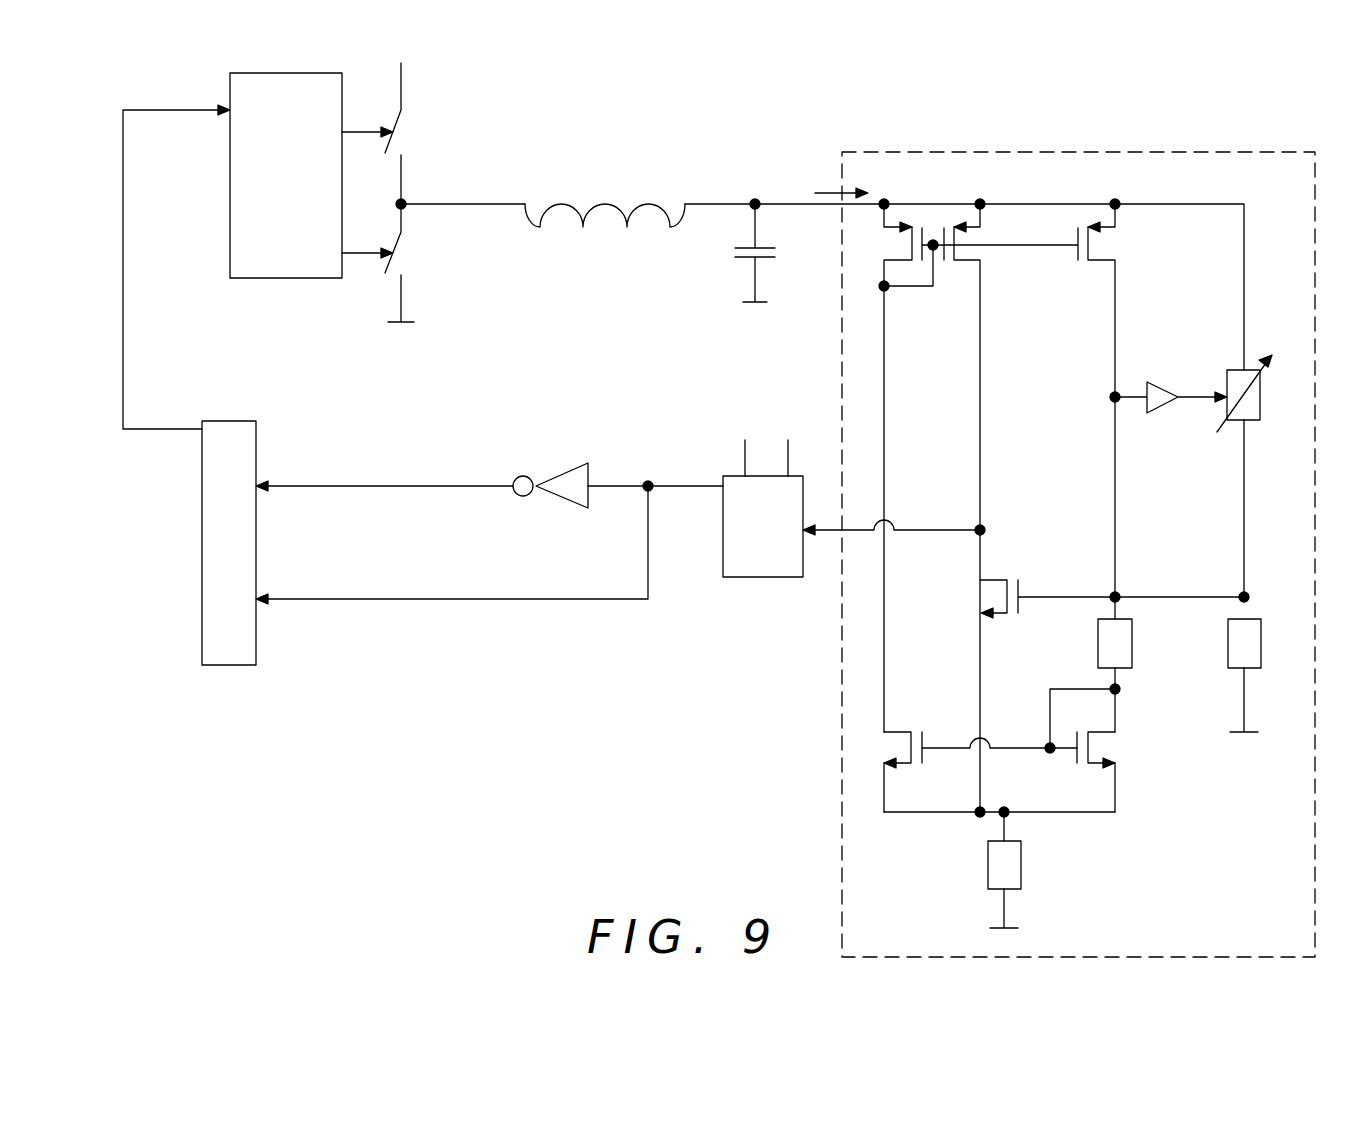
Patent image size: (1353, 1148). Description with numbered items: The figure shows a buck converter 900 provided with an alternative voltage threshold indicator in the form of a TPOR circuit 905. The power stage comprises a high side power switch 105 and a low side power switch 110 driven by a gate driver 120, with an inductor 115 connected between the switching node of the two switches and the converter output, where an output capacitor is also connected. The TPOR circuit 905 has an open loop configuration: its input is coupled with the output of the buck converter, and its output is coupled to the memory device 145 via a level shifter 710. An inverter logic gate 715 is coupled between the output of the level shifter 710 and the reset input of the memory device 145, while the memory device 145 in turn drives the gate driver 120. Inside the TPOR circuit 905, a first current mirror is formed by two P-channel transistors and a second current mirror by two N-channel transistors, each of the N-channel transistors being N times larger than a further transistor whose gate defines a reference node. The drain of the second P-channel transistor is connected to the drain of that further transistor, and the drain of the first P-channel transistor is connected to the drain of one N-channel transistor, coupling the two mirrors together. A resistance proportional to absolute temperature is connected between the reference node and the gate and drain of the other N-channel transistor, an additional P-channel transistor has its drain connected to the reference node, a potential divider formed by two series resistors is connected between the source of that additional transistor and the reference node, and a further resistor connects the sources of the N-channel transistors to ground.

The gate driver 120 is at (300, 73).
The high side power switch 105 is at (420, 119).
The low side power switch 110 is at (412, 270).
The inductor 115 is at (617, 198).
The TPOR circuit 905 is at (1003, 151).
The memory device 145 is at (248, 421).
The inverter logic gate 715 is at (556, 471).
The level shifter 710 is at (783, 578).
The power converter circuit 900 is at (552, 658).